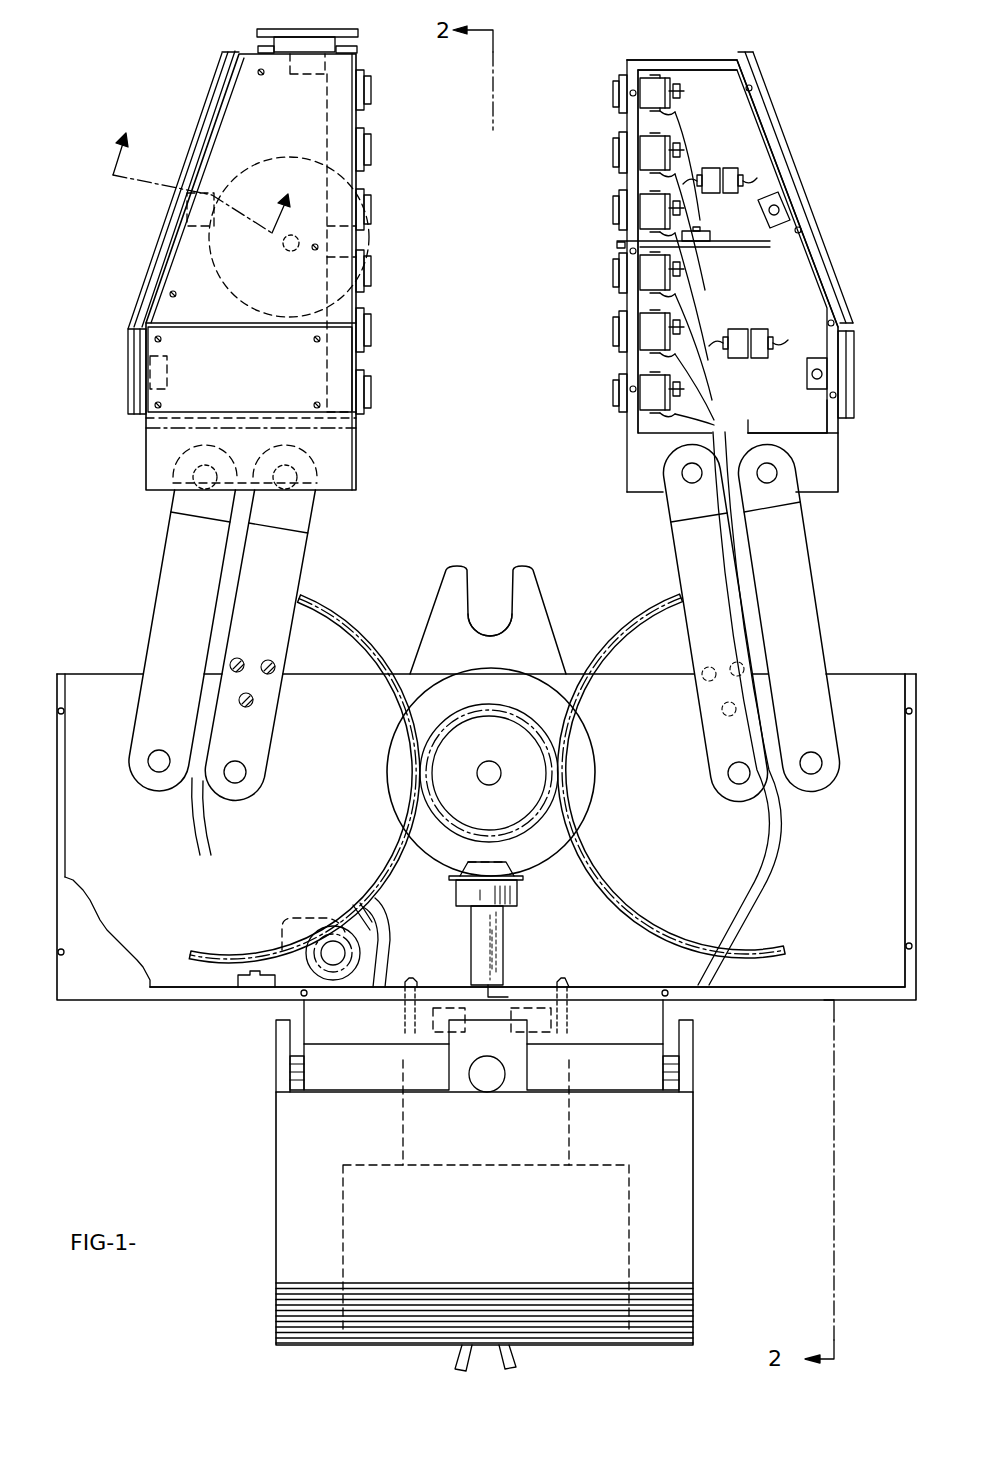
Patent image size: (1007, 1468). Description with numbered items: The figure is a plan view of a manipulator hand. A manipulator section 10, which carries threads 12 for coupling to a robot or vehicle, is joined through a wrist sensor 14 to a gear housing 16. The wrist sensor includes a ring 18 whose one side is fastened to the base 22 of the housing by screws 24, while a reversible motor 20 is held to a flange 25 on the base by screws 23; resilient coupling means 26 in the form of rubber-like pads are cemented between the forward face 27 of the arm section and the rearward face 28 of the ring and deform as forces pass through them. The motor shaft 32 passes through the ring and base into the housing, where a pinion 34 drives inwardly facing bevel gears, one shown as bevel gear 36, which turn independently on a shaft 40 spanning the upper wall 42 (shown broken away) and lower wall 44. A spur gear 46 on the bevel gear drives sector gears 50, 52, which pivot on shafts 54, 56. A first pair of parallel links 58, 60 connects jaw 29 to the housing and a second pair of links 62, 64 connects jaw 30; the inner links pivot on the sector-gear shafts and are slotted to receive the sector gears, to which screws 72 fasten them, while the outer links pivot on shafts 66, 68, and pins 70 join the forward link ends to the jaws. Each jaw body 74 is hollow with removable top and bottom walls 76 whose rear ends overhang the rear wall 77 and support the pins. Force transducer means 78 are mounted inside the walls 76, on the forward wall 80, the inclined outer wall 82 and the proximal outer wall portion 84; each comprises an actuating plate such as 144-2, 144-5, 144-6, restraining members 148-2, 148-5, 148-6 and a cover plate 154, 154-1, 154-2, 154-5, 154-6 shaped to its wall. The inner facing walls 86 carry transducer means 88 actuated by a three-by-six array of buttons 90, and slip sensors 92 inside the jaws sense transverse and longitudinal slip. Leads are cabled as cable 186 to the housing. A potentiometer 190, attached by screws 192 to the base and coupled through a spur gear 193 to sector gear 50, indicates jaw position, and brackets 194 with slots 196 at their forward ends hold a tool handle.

The manipulator section 10 is at (693, 1248).
The threads 12 is at (693, 1300).
The wrist sensor 14 is at (252, 1086).
The gear box or housing 16 is at (922, 976).
The ring 18 is at (312, 1010).
The reversible motor 20 is at (629, 1221).
The base 22 is at (892, 994).
The screws 23 is at (433, 1015).
The screws 24 is at (417, 980).
The flange 25 is at (551, 1015).
The resilient coupling means 26 is at (322, 1080).
The forward face 27 is at (655, 1050).
The rearward face 28 is at (668, 1065).
The jaw 29 is at (142, 476).
The jaw 30 is at (838, 440).
The motor shaft 32 is at (503, 945).
The pinion 34 is at (518, 895).
The bevel gear 36 is at (596, 776).
The shaft 40 is at (501, 773).
The upper wall 42 is at (83, 983).
The lower wall 44 is at (85, 680).
The spur gear 46 is at (543, 750).
The sector gear 50 is at (322, 626).
The sector gear 52 is at (663, 617).
The shaft 54 is at (231, 785).
The shaft 56 is at (737, 780).
The link 58 is at (283, 571).
The link 60 is at (165, 608).
The link 62 is at (681, 532).
The link 64 is at (800, 619).
The shaft 66 is at (157, 767).
The shaft 68 is at (825, 763).
The pins 70 is at (262, 488).
The screws 72 is at (248, 698).
The jaw body 74 is at (811, 440).
The removable top and bottom walls 76 is at (175, 323).
The rear wall 77 is at (785, 435).
The force transducer means 78 is at (285, 78).
The forward wall 80 is at (683, 66).
The inclined outer wall 82 is at (753, 105).
The proximal outer wall portion 84 is at (831, 410).
The inner facing wall 86 is at (628, 300).
The transducer means 88 is at (335, 117).
The transducer actuating means 90 is at (375, 93).
The slip sensors 92 is at (374, 237).
The actuating plate 144-2 is at (286, 45).
The actuating plate 144-5 is at (202, 138).
The actuating plate 144-6 is at (137, 368).
The restraining members 148-2 is at (358, 50).
The restraining members 148-5 is at (220, 113).
The restraining members 148-6 is at (130, 340).
The cover plate 154 is at (239, 91).
The cover plate 154-1 is at (144, 449).
The cover plate 154-2 is at (305, 33).
The cover plate 154-5 is at (177, 222).
The cover plate 154-6 is at (128, 392).
The cable 186 is at (187, 815).
The potentiometer 190 is at (297, 918).
The screws 192 is at (258, 970).
The spur gear 193 is at (348, 937).
The brackets 194 is at (539, 598).
The slot 196 is at (471, 588).